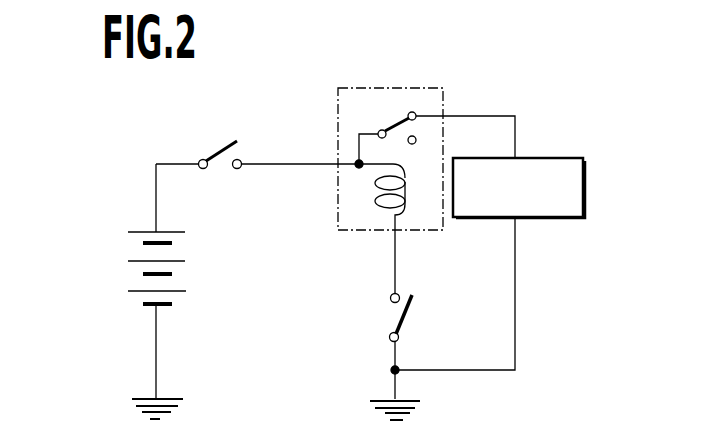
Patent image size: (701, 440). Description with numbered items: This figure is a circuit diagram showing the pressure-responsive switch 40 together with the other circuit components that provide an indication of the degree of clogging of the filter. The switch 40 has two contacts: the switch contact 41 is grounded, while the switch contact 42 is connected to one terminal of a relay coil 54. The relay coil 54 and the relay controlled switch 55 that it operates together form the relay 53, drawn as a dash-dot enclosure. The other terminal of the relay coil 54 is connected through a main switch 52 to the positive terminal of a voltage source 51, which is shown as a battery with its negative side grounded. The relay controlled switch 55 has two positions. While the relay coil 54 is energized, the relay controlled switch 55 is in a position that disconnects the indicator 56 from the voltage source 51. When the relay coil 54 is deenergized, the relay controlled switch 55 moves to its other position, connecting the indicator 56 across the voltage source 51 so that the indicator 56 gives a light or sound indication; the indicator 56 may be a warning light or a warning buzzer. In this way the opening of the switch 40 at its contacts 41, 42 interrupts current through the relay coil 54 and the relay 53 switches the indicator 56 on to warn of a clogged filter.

The switch 40 is at (380, 315).
The switch contact 41 is at (392, 342).
The switch contact 42 is at (390, 297).
The voltage source 51 is at (135, 272).
The main switch 52 is at (223, 150).
The relay 53 is at (388, 87).
The relay coil 54 is at (407, 200).
The relay controlled switch 55 is at (393, 121).
The indicator 56 is at (531, 158).